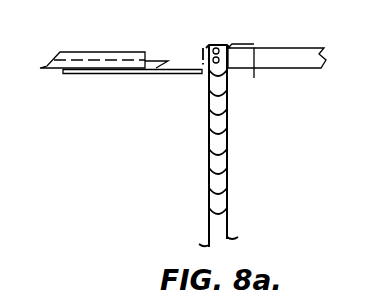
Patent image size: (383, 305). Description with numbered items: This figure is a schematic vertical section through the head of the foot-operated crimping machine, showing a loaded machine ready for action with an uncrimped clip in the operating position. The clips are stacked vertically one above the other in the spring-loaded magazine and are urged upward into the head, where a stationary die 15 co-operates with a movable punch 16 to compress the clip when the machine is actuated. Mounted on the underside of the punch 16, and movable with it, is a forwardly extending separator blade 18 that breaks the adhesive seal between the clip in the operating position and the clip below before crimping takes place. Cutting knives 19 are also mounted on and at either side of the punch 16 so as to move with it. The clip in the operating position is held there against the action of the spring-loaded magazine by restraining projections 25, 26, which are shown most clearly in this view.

The stationary die 15 is at (304, 53).
The movable punch 16 is at (105, 53).
The separator blade 18 is at (172, 75).
The cutting knives 19 is at (153, 62).
The restraining projection 25 is at (208, 47).
The restraining projection 26 is at (248, 46).